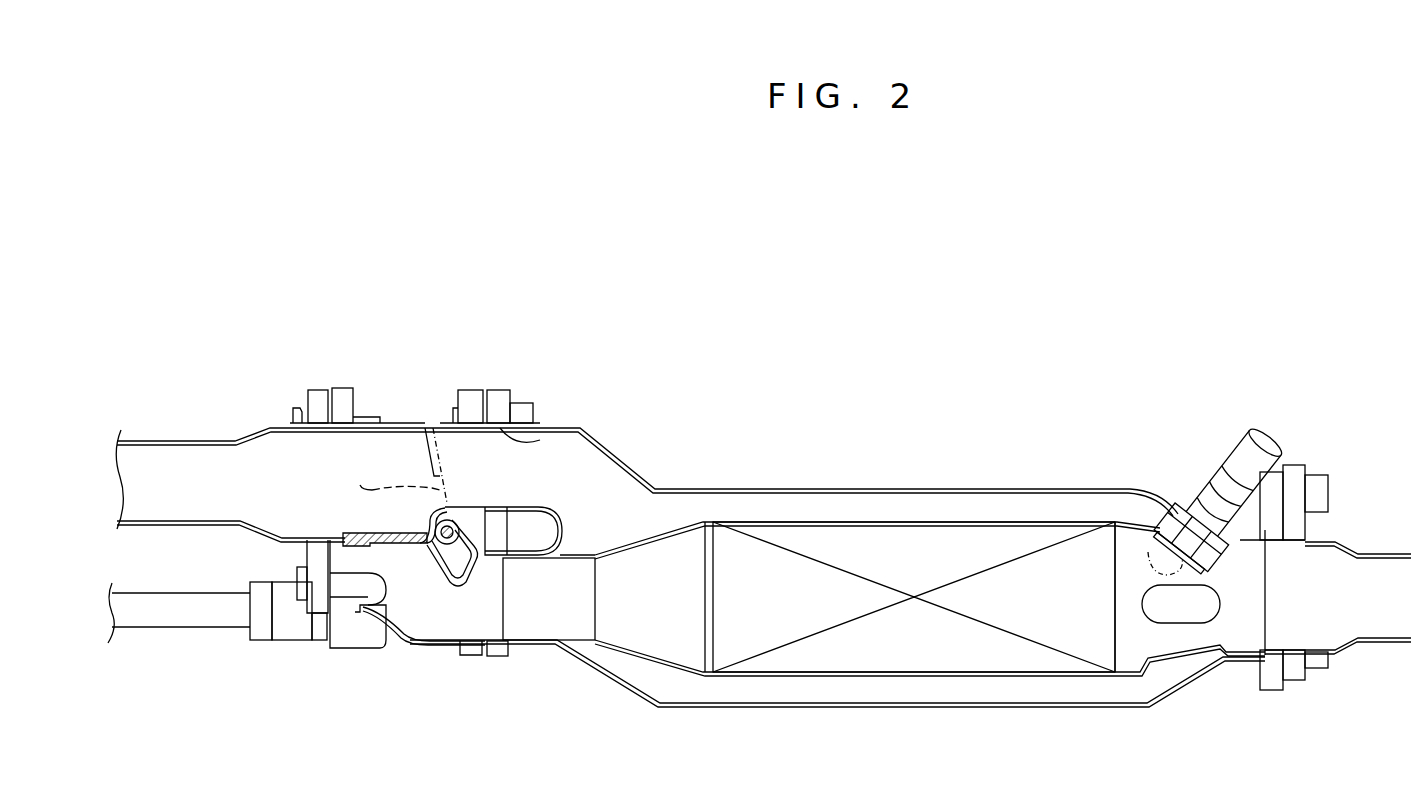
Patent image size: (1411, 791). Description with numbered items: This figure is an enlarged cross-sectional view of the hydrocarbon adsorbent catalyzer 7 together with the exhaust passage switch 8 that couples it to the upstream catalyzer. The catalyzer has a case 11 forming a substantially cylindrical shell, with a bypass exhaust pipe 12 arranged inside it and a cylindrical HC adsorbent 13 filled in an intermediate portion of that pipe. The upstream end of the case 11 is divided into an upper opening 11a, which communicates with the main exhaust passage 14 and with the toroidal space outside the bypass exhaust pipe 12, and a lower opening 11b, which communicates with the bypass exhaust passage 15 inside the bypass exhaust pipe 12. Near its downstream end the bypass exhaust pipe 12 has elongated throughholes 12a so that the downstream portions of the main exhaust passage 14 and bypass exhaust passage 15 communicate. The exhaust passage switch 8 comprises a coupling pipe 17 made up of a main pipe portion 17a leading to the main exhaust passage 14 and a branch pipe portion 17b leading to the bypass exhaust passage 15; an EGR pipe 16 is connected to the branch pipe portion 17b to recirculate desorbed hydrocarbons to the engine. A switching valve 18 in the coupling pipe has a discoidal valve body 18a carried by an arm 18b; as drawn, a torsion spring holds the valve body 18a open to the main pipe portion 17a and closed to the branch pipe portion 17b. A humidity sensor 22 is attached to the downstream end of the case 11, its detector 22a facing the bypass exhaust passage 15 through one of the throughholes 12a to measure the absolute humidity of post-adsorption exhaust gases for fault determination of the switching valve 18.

The hydrocarbon adsorbent catalyzer 7 is at (872, 318).
The exhaust passage switch 8 is at (428, 318).
The case 11 is at (950, 489).
The upper opening 11a is at (505, 443).
The lower opening 11b is at (487, 633).
The bypass exhaust pipe 12 is at (630, 655).
The elongated throughholes 12a is at (1185, 614).
The HC adsorbent 13 is at (940, 662).
The main exhaust passage 14 is at (615, 511).
The bypass exhaust passage 15 is at (650, 607).
The EGR pipe 16 is at (183, 627).
The coupling pipe 17 is at (403, 418).
The main pipe portion 17a is at (437, 420).
The branch pipe portion 17b is at (415, 641).
The switching valve 18 is at (403, 575).
The valve body 18a is at (384, 476).
The arm 18b is at (455, 573).
The humidity sensor 22 is at (1238, 446).
The detector 22a is at (1150, 556).